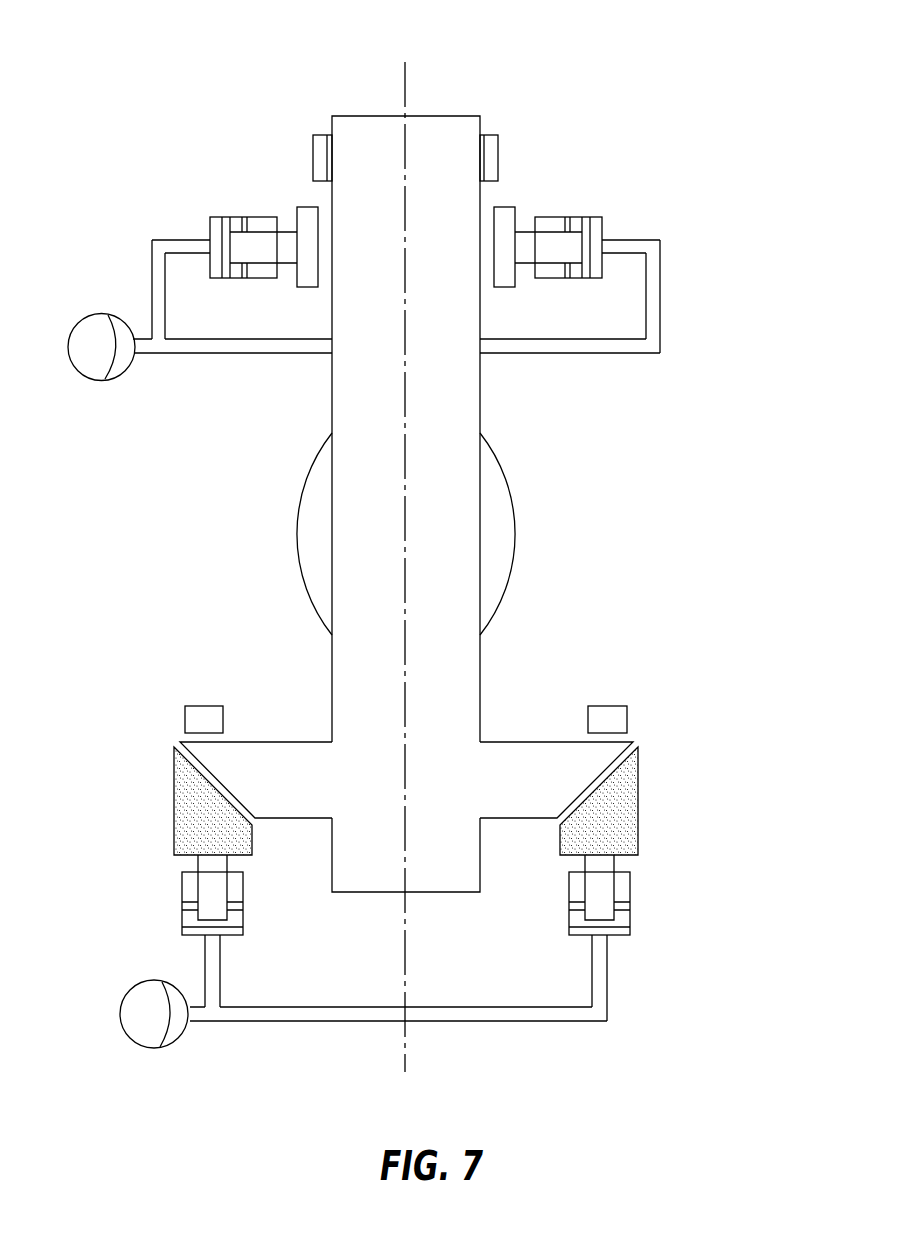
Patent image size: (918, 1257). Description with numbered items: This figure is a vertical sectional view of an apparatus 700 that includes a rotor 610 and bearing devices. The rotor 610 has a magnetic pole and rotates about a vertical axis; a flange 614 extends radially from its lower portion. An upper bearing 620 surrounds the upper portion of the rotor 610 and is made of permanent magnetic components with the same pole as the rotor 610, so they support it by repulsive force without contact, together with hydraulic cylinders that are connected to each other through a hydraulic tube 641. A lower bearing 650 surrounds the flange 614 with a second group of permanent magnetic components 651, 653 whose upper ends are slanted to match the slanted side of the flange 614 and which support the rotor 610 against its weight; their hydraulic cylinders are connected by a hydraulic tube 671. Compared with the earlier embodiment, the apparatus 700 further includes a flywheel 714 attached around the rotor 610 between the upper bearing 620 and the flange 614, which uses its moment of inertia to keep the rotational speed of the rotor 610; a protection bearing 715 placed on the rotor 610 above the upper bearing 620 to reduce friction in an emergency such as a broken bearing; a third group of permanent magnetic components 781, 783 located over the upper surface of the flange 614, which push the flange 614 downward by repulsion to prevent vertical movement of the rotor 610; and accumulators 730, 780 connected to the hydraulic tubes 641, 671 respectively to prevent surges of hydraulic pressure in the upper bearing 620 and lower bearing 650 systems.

The apparatus 700 is at (90, 108).
The rotor 610 is at (452, 116).
The flange 614 is at (503, 762).
The flywheel 714 is at (515, 530).
The protection bearing 715 is at (313, 152).
The upper bearing 620 is at (444, 328).
The hydraulic tube 641 is at (660, 312).
The accumulator 730 is at (103, 381).
The lower bearing 650 is at (451, 908).
The permanent magnetic component 651 is at (627, 812).
The permanent magnetic component 653 is at (182, 815).
The hydraulic tube 671 is at (578, 1021).
The accumulator 780 is at (157, 1048).
The permanent magnetic component 781 is at (656, 715).
The permanent magnetic component 783 is at (185, 715).